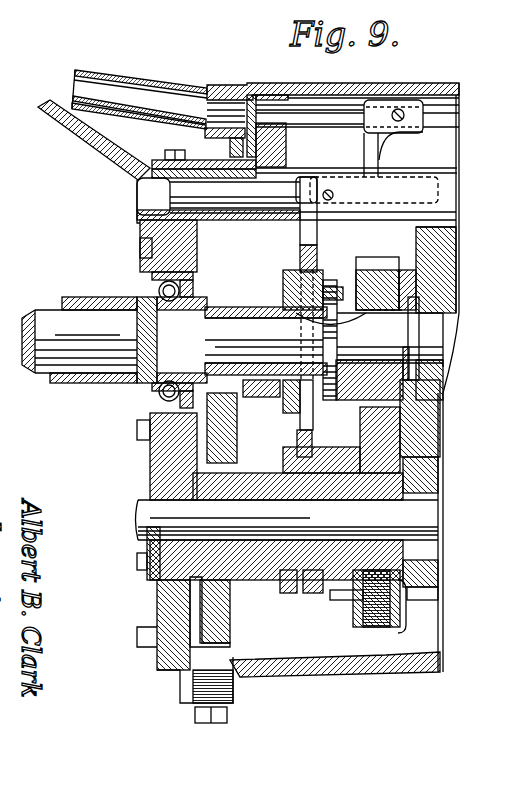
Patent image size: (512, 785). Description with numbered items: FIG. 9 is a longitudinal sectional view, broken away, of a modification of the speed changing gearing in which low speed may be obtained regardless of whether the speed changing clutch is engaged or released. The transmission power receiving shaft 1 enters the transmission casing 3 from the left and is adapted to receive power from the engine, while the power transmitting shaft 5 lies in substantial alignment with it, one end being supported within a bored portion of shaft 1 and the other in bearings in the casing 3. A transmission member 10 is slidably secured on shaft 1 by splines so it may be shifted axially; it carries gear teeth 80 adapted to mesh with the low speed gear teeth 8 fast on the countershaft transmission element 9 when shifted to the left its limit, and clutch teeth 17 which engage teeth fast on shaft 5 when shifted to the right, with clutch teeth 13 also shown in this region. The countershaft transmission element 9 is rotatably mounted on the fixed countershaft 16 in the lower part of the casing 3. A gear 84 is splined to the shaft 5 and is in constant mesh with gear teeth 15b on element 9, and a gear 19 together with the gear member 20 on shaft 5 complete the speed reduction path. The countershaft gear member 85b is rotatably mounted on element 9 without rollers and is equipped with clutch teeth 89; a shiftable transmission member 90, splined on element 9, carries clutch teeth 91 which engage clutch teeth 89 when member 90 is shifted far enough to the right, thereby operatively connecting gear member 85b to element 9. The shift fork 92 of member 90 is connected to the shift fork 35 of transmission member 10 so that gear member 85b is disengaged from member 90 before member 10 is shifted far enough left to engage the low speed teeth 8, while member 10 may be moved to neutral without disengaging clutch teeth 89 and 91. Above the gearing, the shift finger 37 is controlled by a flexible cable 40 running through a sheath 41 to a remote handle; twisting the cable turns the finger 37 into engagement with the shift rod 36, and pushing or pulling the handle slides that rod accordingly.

The transmission power receiving shaft 1 is at (48, 318).
The transmission casing 3 is at (330, 672).
The power transmitting shaft 5 is at (440, 333).
The gear teeth 8 is at (230, 647).
The countershaft transmission element 9 is at (262, 568).
The transmission member 10 is at (288, 413).
The clutch teeth 13 is at (331, 290).
The gear teeth 15b is at (352, 628).
The fixed countershaft 16 is at (425, 512).
The clutch teeth 17 is at (316, 397).
The gear 19 is at (438, 570).
The gear member 20 is at (445, 283).
The shift fork 35 is at (305, 232).
The shift rod 36 is at (185, 188).
The shift finger 37 is at (362, 146).
The flexible cable 40 is at (87, 88).
The sheath 41 is at (138, 88).
The gear teeth 80 is at (262, 397).
The gear 84 is at (374, 270).
The countershaft gear member 85b is at (395, 612).
The clutch teeth 89 is at (375, 600).
The shiftable transmission member 90 is at (288, 595).
The clutch teeth 91 is at (322, 595).
The shift fork 92 is at (310, 425).